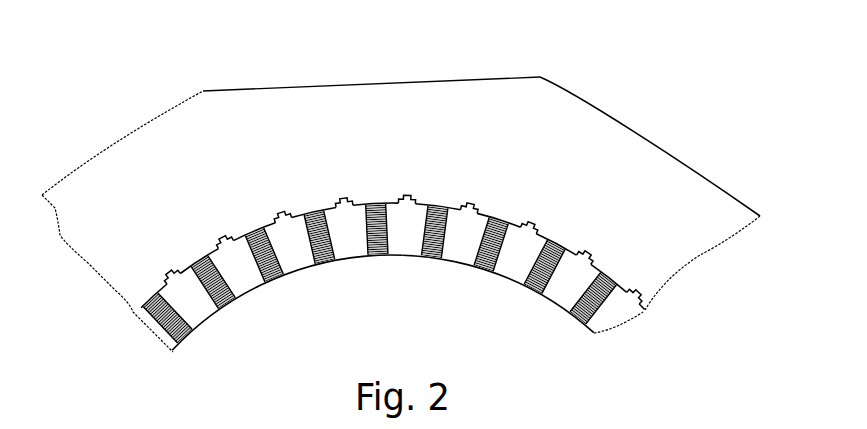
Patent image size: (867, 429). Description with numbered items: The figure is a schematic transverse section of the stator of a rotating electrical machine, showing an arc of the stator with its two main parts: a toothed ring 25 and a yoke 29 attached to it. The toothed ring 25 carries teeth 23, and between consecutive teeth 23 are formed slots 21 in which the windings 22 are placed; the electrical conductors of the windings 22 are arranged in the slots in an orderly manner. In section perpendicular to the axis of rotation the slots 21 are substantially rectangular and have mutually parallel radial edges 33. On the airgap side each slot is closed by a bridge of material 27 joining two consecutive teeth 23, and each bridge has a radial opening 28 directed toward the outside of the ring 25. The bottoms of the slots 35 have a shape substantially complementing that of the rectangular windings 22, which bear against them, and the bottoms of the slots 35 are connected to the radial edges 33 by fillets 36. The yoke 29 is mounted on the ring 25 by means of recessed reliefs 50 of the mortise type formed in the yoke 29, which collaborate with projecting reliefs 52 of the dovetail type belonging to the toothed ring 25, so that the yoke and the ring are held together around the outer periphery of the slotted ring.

The slots 21 is at (525, 215).
The windings 22 is at (552, 235).
The teeth 23 is at (588, 257).
The toothed ring 25 is at (643, 313).
The bridges of material 27 is at (422, 262).
The radial opening 28 is at (480, 272).
The yoke 29 is at (672, 165).
The radial edges 33 is at (549, 278).
The bottoms of the slots 35 is at (430, 262).
The fillets 36 is at (413, 262).
The recessed reliefs 50 is at (457, 212).
The projecting reliefs 52 is at (401, 198).